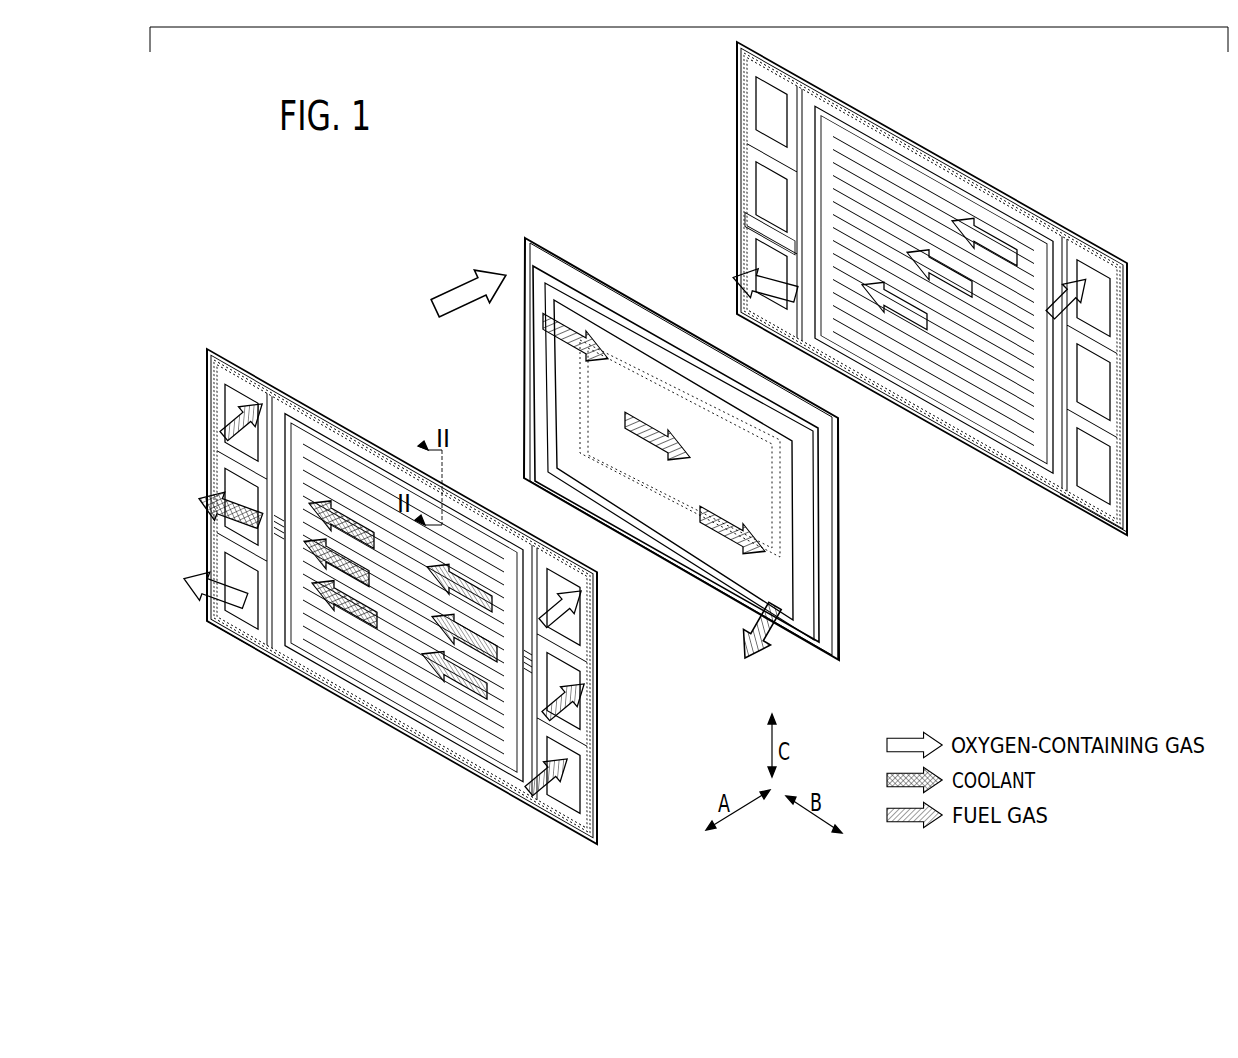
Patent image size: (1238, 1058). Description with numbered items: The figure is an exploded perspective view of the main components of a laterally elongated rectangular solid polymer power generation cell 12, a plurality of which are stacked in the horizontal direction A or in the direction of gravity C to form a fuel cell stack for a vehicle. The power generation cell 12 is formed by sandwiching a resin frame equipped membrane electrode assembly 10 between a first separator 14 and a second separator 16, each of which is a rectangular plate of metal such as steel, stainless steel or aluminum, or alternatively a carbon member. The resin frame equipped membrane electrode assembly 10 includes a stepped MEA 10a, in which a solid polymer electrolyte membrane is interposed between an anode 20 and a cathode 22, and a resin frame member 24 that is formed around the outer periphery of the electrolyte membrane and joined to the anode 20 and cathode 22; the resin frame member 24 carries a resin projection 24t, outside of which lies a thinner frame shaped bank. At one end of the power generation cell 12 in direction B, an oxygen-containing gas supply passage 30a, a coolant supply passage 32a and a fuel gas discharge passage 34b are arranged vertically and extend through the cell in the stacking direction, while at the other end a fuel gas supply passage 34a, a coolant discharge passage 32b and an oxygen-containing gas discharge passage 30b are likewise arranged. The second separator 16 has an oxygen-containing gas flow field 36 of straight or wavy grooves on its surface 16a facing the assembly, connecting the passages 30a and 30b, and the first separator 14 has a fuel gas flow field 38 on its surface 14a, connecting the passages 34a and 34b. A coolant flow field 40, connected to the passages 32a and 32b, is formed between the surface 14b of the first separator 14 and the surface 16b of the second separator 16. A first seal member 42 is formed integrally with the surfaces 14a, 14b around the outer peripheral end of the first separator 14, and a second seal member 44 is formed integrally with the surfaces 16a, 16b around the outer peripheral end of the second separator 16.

The resin frame equipped membrane electrode assembly 10 is at (528, 238).
The stepped MEA 10a is at (650, 512).
The power generation cell 12 is at (460, 170).
The first separator 14 is at (222, 347).
The surface of first separator 14a is at (235, 633).
The surface of first separator 14b is at (256, 653).
The second separator 16 is at (735, 50).
The surface of second separator 16a is at (1088, 508).
The surface of second separator 16b is at (1108, 538).
The anode 20 is at (575, 432).
The cathode 22 is at (667, 332).
The resin frame member 24 is at (580, 265).
The resin projection 24t is at (841, 525).
The oxygen-containing gas supply passage 30a is at (562, 632).
The oxygen-containing gas discharge passage 30b is at (235, 557).
The coolant supply passage 32a is at (562, 673).
The coolant discharge passage 32b is at (238, 474).
The fuel gas supply passage 34a is at (245, 403).
The fuel gas discharge passage 34b is at (560, 757).
The oxygen-containing gas flow field 36 is at (897, 185).
The fuel gas flow field 38 is at (365, 452).
The coolant flow field 40 is at (338, 656).
The first seal member 42 is at (300, 422).
The second seal member 44 is at (752, 207).